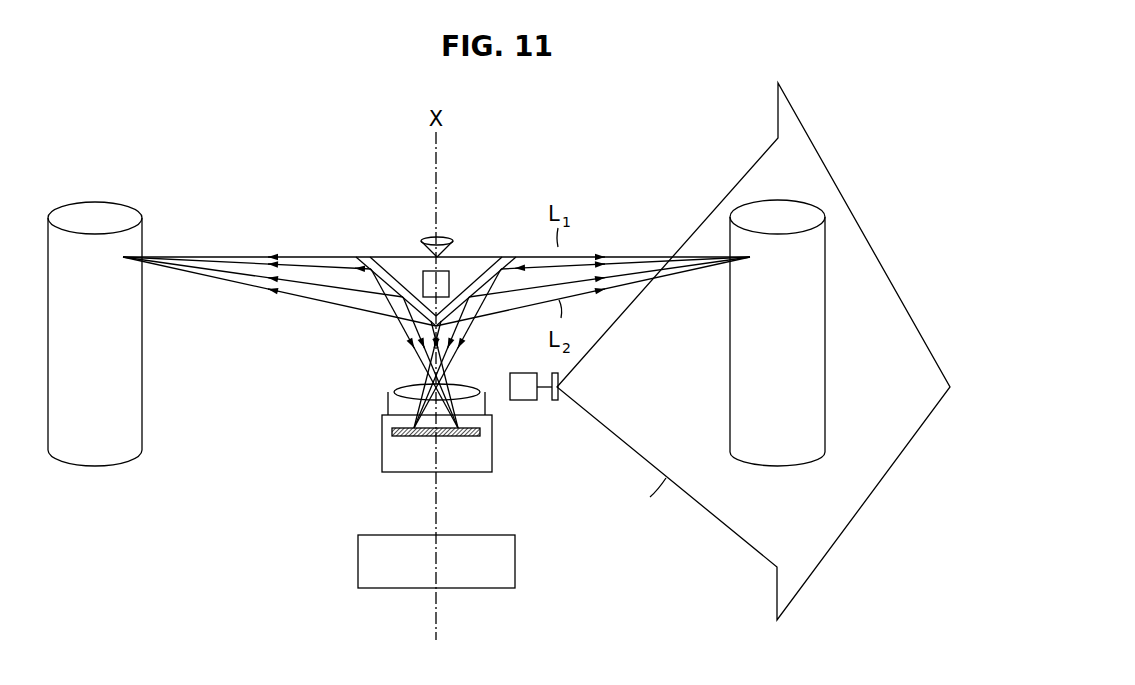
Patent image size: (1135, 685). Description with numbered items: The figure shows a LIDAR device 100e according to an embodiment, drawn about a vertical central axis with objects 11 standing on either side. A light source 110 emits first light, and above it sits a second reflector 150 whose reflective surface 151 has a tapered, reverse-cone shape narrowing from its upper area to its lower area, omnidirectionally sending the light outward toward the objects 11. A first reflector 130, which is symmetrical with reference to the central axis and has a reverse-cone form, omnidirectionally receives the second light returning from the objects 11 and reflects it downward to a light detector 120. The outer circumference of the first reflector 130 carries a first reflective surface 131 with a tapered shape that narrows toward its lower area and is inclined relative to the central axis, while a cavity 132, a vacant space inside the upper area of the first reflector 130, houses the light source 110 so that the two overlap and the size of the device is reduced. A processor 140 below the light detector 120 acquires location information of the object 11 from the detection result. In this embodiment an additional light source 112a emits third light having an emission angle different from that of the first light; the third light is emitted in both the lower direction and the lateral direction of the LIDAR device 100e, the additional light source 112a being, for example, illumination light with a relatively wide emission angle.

The object 11 is at (98, 457).
The LIDAR device 100e is at (661, 159).
The light source 110 is at (448, 287).
The additional light source 112a is at (523, 373).
The light detector 120 is at (482, 445).
The first reflector 130 is at (390, 270).
The first reflective surface 131 is at (385, 272).
The cavity 132 is at (473, 277).
The processor 140 is at (515, 562).
The second reflector 150 is at (449, 238).
The reflective surface 151 is at (425, 249).